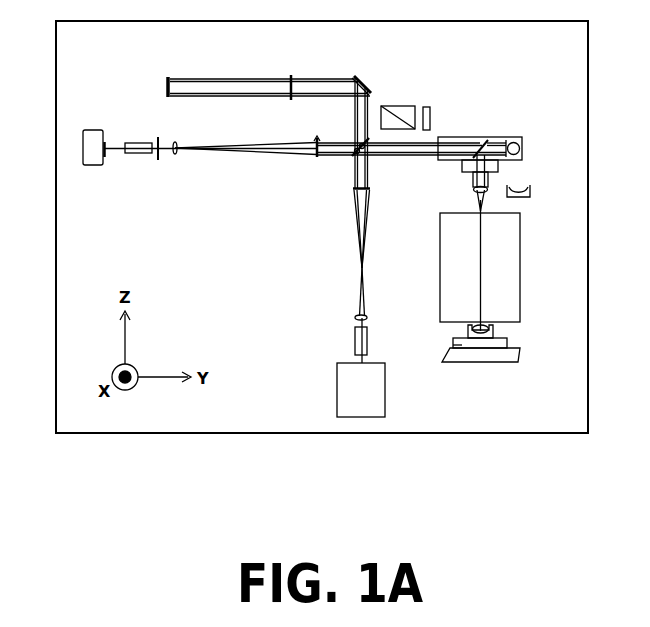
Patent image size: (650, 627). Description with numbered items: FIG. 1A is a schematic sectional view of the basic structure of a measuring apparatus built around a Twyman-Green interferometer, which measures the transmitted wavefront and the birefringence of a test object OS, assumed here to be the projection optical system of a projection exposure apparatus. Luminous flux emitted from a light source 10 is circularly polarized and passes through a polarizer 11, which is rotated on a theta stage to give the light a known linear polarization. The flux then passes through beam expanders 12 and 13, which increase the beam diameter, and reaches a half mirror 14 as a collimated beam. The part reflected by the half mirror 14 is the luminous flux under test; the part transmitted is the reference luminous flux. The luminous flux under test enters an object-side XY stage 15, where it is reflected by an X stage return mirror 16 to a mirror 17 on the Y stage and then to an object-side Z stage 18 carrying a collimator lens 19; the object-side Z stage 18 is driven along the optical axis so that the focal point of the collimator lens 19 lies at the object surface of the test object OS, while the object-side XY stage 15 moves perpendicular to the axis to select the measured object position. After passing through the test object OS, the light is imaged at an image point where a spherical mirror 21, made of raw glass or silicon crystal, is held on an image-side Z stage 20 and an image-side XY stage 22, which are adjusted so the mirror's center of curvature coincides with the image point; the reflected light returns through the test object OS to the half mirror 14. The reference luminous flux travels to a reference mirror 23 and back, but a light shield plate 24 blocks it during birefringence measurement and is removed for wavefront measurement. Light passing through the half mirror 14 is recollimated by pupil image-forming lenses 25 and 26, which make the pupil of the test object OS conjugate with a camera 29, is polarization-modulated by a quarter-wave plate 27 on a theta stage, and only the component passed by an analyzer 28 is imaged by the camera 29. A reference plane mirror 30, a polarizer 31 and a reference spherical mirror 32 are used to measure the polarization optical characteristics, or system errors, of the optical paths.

The light source 10 is at (371, 405).
The polarizer 11 is at (369, 336).
The beam expander 12 is at (366, 316).
The beam expander 13 is at (352, 191).
The half mirror 14 is at (352, 153).
The object-side XY stage 15 is at (505, 138).
The X stage return mirror 16 is at (521, 148).
The mirror 17 is at (486, 139).
The object-side Z stage 18 is at (463, 164).
The collimator lens 19 is at (475, 178).
The image-side Z stage 20 is at (503, 338).
The spherical mirror 21 is at (456, 348).
The image-side XY stage 22 is at (518, 351).
The reference mirror 23 is at (172, 80).
The light shield plate 24 is at (292, 78).
The pupil image-forming lens 25 is at (313, 158).
The pupil image-forming lens 26 is at (173, 153).
The λ/4 plate 27 is at (161, 139).
The analyzer 28 is at (133, 141).
The camera 29 is at (100, 134).
The reference plane mirror 30 is at (432, 108).
The polarizer 31 is at (398, 106).
The reference spherical mirror 32 is at (532, 190).
The test object OS is at (509, 280).